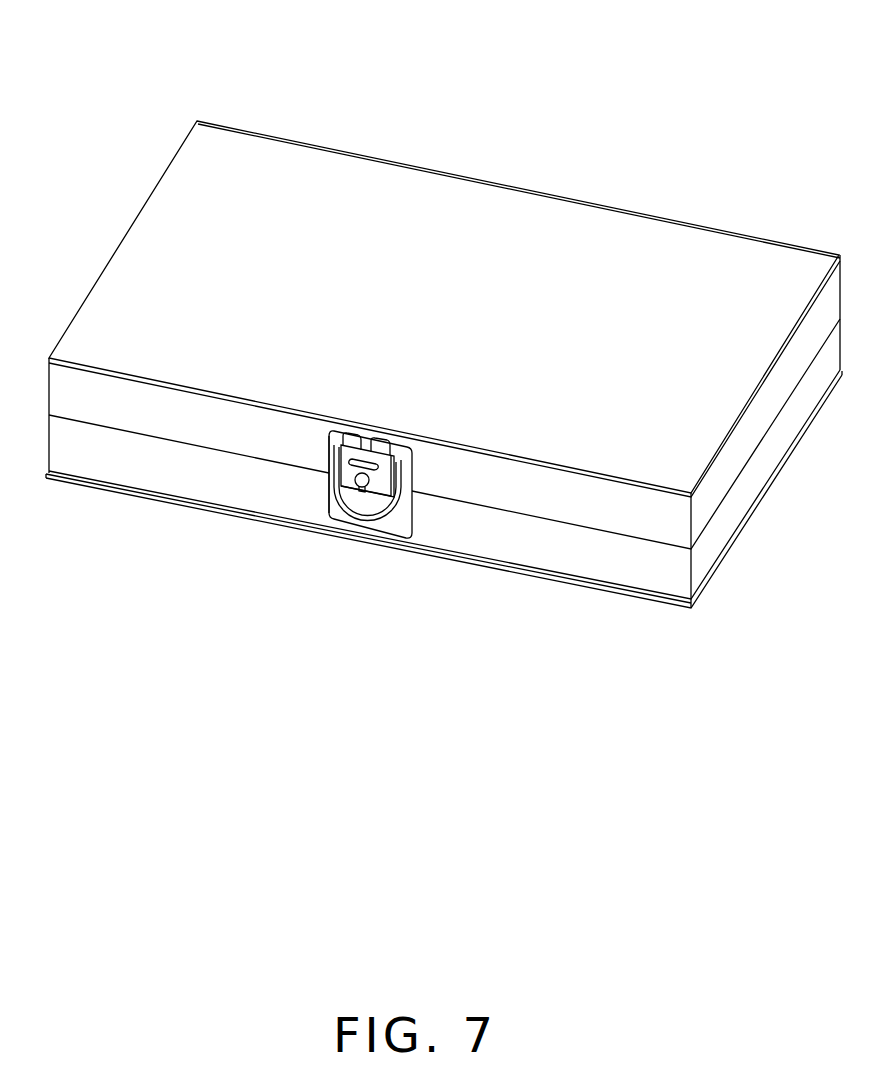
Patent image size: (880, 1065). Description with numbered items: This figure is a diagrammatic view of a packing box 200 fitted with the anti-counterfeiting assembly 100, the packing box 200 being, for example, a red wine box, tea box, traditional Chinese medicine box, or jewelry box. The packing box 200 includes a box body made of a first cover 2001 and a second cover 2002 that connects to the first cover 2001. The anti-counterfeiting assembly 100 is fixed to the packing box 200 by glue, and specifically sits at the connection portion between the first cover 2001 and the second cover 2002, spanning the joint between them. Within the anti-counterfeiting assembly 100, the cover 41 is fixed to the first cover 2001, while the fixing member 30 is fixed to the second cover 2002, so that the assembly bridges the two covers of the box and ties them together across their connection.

The packing box 200 is at (338, 60).
The first cover 2001 is at (675, 516).
The second cover 2002 is at (672, 577).
The fixing member 30 is at (345, 518).
The cover 41 is at (347, 478).
The anti-counterfeiting assembly 100 is at (421, 530).